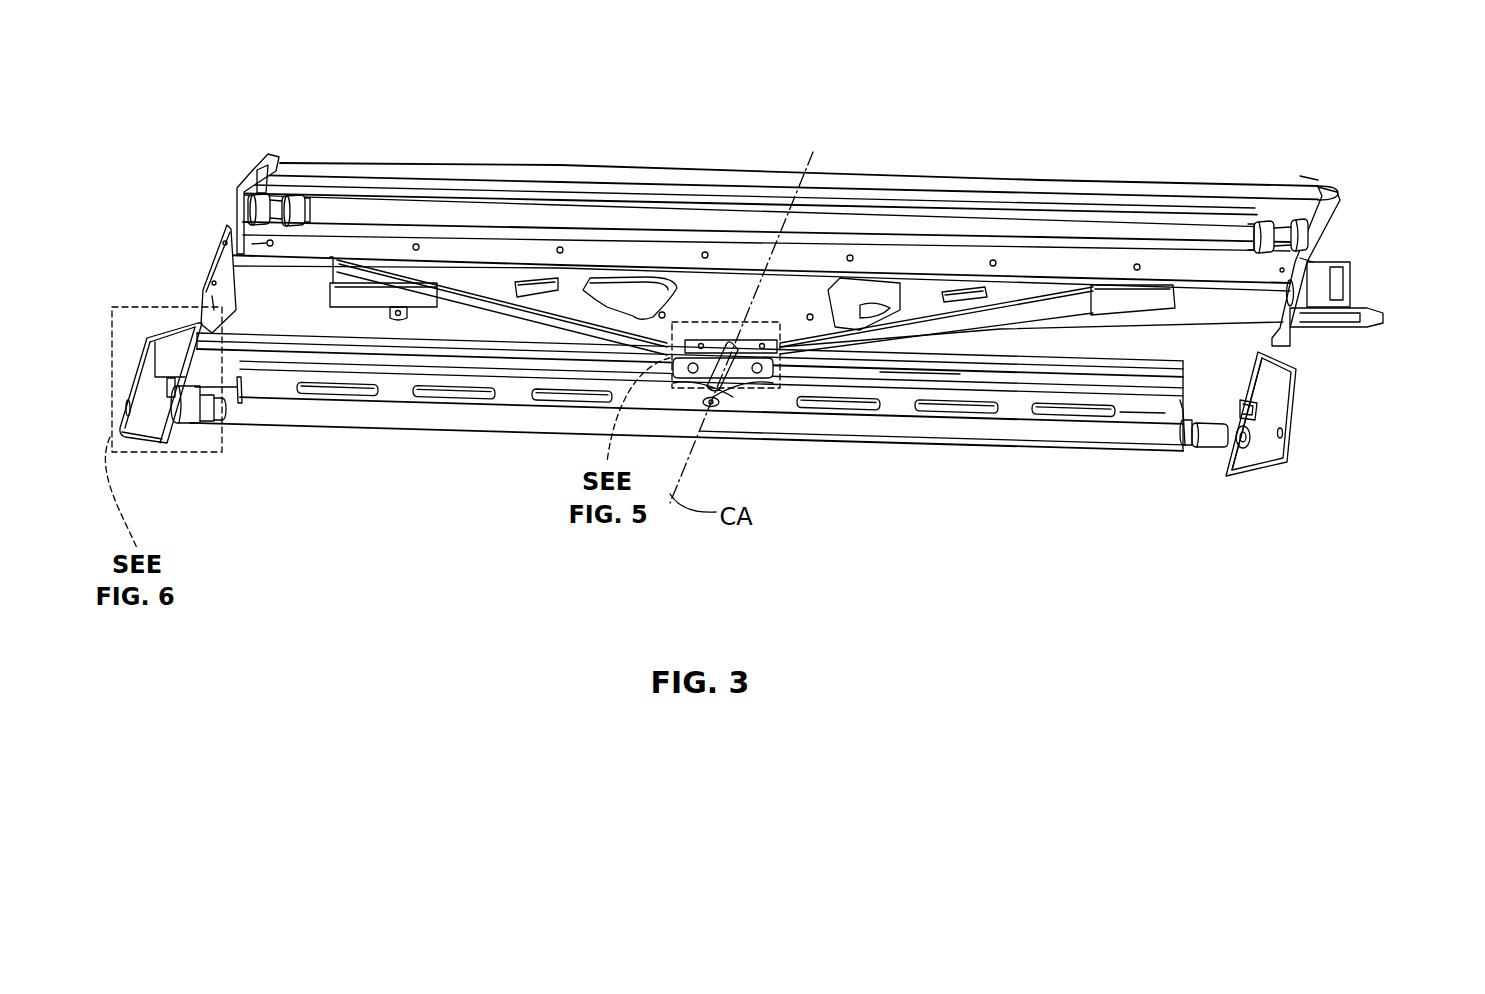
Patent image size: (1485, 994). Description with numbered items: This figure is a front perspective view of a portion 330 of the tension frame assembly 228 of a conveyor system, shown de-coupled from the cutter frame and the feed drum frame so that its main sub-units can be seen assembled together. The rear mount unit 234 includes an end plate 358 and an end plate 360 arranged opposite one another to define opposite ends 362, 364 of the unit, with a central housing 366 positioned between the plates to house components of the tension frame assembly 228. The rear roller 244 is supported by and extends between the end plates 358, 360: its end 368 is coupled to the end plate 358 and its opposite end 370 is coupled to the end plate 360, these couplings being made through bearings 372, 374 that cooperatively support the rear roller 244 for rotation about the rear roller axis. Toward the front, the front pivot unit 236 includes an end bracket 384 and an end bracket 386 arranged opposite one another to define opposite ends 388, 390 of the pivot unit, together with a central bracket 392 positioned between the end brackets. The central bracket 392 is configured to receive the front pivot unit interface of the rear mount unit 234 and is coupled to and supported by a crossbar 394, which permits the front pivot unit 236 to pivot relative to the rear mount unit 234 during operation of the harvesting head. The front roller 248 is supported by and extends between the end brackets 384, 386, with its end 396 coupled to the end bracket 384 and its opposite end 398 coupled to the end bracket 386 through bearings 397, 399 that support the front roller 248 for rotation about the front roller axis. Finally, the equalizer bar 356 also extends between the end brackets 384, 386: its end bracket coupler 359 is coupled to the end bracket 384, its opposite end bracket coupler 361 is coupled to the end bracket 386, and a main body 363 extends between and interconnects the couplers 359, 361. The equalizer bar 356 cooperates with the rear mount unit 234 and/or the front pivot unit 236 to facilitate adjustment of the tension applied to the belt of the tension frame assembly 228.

The tension frame assembly 228 is at (1338, 97).
The rear mount unit 234 is at (1304, 186).
The front pivot unit 236 is at (1273, 383).
The rear roller 244 is at (596, 218).
The front roller 248 is at (290, 417).
The portion of the tension frame assembly 330 is at (1227, 125).
The equalizer bar 356 is at (1152, 414).
The end plate 358 is at (204, 267).
The end bracket coupler 359 is at (192, 388).
The end plate 360 is at (1309, 290).
The end bracket coupler 361 is at (1214, 410).
The end of the rear mount unit 362 is at (221, 227).
The main body 363 is at (412, 400).
The end of the rear mount unit 364 is at (1321, 294).
The central housing 366 is at (487, 278).
The end of the rear roller 368 is at (291, 200).
The end of the rear roller 370 is at (1272, 237).
The bearing 372 is at (266, 212).
The bearing 374 is at (1283, 230).
The end bracket 384 is at (133, 418).
The end bracket 386 is at (1289, 442).
The end of the front pivot unit 388 is at (133, 377).
The end of the front pivot unit 390 is at (1290, 407).
The central bracket 392 is at (744, 372).
The crossbar 394 is at (917, 373).
The end of the front roller 396 is at (196, 433).
The bearing 397 is at (185, 428).
The end of the front roller 398 is at (1183, 437).
The bearing 399 is at (1212, 440).